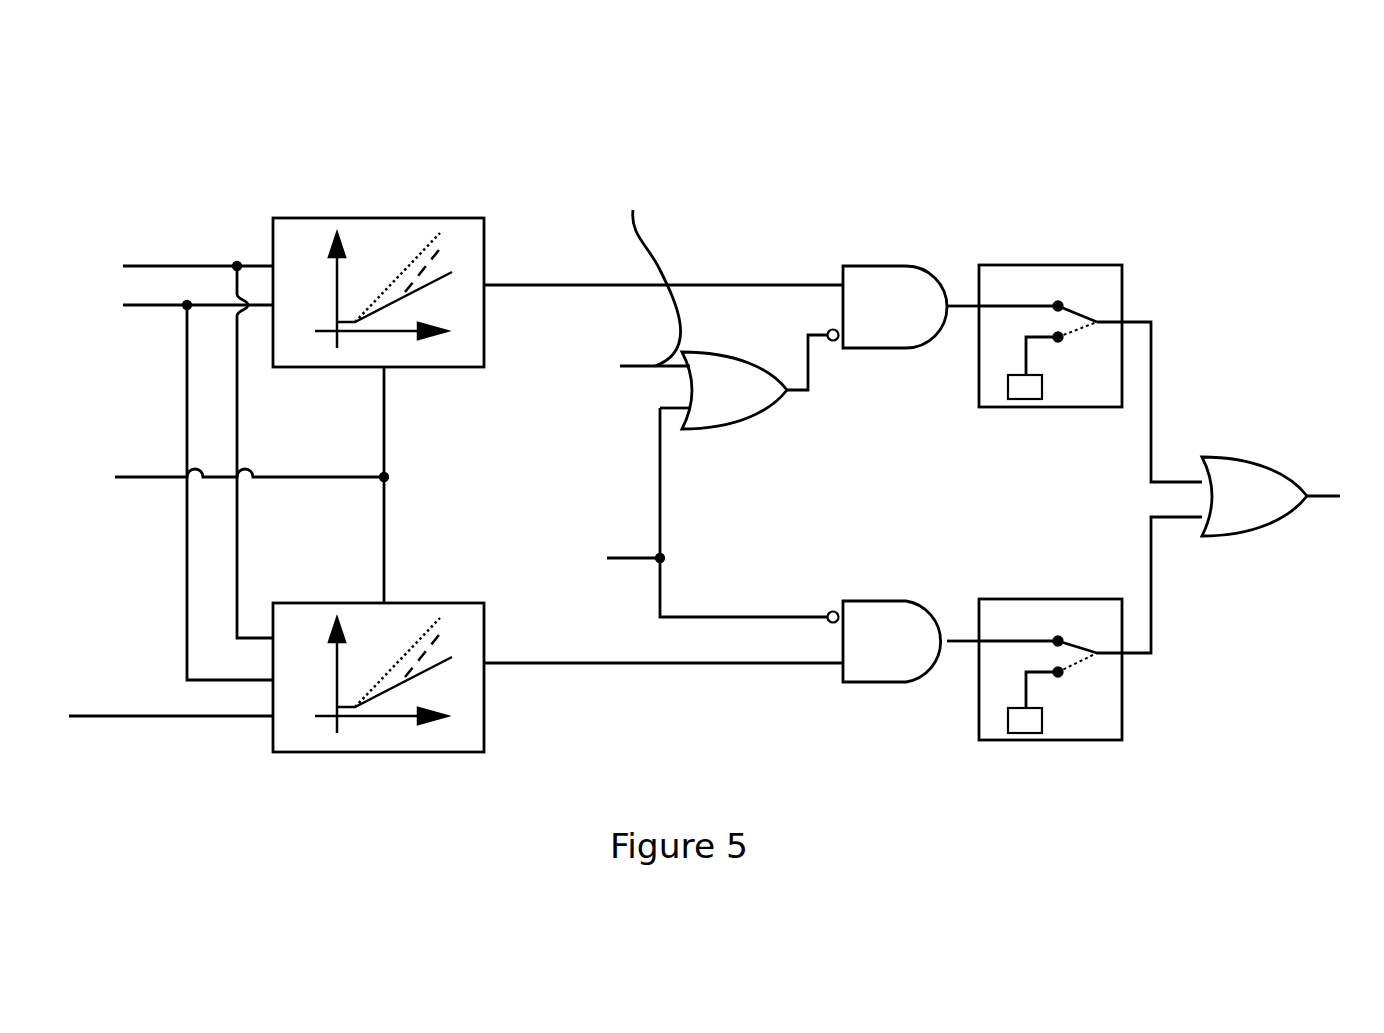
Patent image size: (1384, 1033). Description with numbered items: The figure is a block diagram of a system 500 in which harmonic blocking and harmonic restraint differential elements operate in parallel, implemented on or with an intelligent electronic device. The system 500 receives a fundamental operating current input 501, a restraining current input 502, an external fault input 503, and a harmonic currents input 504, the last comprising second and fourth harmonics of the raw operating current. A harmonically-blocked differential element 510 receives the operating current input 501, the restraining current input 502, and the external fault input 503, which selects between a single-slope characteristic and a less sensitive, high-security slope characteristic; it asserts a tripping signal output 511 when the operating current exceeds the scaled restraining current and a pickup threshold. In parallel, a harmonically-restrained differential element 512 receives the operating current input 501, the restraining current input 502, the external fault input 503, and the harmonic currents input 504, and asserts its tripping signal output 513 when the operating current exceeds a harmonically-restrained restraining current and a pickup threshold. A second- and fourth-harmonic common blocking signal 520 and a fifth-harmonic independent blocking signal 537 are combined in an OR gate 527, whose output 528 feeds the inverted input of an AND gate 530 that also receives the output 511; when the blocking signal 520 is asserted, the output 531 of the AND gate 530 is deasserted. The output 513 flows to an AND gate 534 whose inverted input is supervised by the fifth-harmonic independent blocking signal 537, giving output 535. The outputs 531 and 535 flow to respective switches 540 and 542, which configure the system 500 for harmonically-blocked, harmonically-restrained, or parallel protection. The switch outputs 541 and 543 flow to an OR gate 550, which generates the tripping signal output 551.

The system 500 is at (230, 188).
The fundamental operating current input 501 is at (159, 427).
The restraining current input 502 is at (159, 487).
The external fault input 503 is at (219, 485).
The harmonic currents input 504 is at (156, 703).
The harmonically-blocked differential element 510 is at (365, 218).
The tripping signal output 511 is at (605, 283).
The harmonically-restrained differential element 512 is at (435, 752).
The tripping signal output 513 is at (593, 665).
The second- and fourth-harmonic common blocking signal 520 is at (740, 224).
The OR gate 527 is at (723, 390).
The output of the OR gate 528 is at (808, 336).
The AND gate 530 is at (895, 307).
The output of the AND gate 531 is at (972, 310).
The AND gate 534 is at (892, 641).
The output of the AND gate 535 is at (972, 645).
The fifth-harmonic independent blocking signal 537 is at (640, 557).
The switch 540 is at (1040, 265).
The output of the switch 541 is at (1151, 337).
The switch 542 is at (1040, 599).
The output of the switch 543 is at (1151, 636).
The OR gate 550 is at (1232, 457).
The tripping signal output 551 is at (1336, 484).